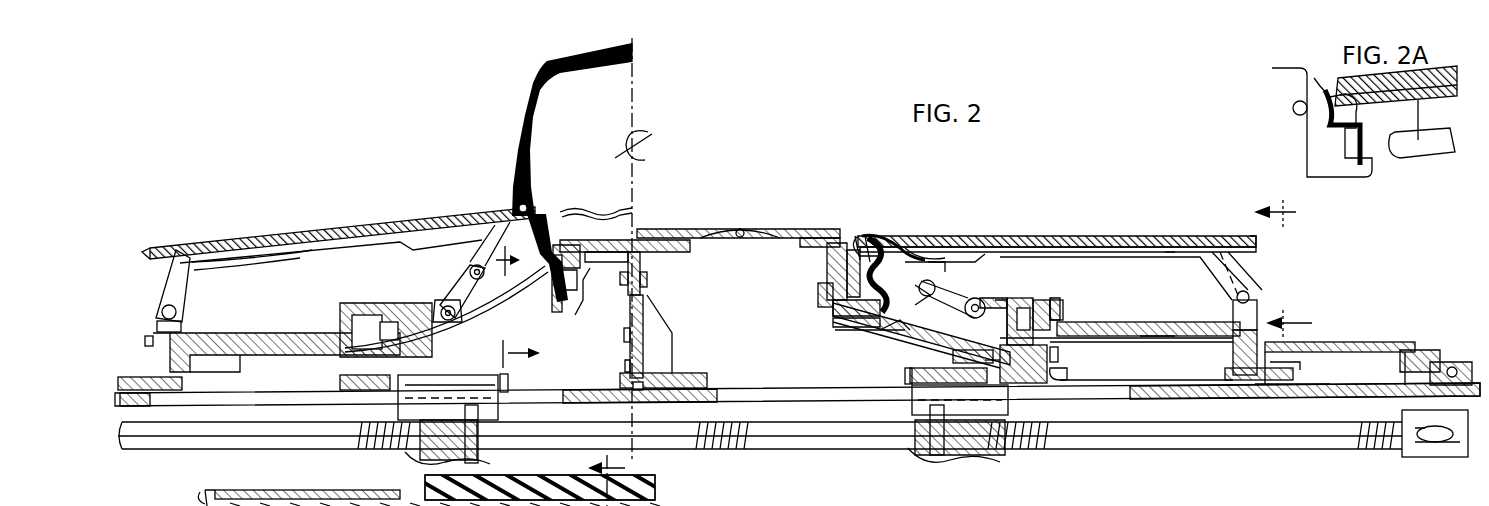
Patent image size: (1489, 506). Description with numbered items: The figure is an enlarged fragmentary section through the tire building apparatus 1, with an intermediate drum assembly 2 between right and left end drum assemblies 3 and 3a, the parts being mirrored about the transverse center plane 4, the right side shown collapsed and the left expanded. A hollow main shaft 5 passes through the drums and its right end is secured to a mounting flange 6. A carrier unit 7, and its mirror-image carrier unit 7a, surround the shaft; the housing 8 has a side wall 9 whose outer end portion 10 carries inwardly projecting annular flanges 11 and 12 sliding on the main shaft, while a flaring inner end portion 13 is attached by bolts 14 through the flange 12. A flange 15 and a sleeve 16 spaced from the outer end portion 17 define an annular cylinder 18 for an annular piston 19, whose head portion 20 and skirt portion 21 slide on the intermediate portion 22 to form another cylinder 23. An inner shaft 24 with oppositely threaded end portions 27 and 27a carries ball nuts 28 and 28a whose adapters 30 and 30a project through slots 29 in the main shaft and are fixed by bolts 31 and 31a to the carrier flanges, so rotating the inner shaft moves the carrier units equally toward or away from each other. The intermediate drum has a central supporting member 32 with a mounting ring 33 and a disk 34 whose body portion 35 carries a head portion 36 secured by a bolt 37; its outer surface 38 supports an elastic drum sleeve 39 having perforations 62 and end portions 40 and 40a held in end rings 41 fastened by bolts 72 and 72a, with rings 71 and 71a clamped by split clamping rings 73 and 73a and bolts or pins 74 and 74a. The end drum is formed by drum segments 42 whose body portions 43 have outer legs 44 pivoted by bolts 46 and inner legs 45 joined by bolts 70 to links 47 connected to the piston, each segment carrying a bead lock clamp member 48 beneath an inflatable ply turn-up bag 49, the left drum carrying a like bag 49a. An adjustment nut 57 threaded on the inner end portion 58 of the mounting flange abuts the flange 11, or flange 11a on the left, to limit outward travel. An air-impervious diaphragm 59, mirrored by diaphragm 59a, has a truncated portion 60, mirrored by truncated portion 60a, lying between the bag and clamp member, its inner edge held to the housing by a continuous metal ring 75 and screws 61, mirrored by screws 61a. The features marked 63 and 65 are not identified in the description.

In FIG. 2, the tire building apparatus 1 is at (1312, 270).
In FIG. 2, the intermediate drum assembly 2 is at (783, 229).
In FIG. 2, the end drum assembly 3 is at (1132, 236).
In FIG. 2, the end drum assembly 3a is at (340, 224).
In FIG. 2, the transverse center plane 4 is at (638, 87).
In FIG. 2, the main shaft 5 is at (1328, 386).
In FIG. 2, the mounting flange 6 is at (1446, 362).
In FIG. 2, the carrier unit 7 is at (1232, 358).
In FIG. 2, the carrier unit 7a is at (153, 333).
In FIG. 2, the housing 8 is at (1118, 322).
In FIG. 2, the side wall portion 9 is at (1158, 322).
In FIG. 2, the outer end portion 10 is at (1193, 322).
In FIG. 2, the annular flange 11 is at (1284, 366).
In FIG. 2, the annular flange 11a is at (578, 275).
In FIG. 2, the annular flange 12 is at (1070, 370).
In FIG. 2, the inner end portion 13 is at (678, 307).
In FIG. 2, the bolts 14 is at (1060, 354).
In FIG. 2, the radially outwardly projecting flange 15 is at (1064, 314).
In FIG. 2, the sleeve 16 is at (1022, 300).
In FIG. 2, the outer end portion 17 is at (990, 348).
In FIG. 2, the annular cylinder 18 is at (1067, 305).
In FIG. 2, the annular piston 19 is at (1033, 300).
In FIG. 2, the annular head portion 20 is at (1048, 306).
In FIG. 2, the annular sleeve or skirt portion 21 is at (1003, 300).
In FIG. 2, the intermediate portion 22 is at (945, 306).
In FIG. 2, the annular cylinder 23 is at (985, 360).
In FIG. 2, the inner shaft 24 is at (792, 452).
In FIG. 2, the threaded end portion 27 is at (1040, 447).
In FIG. 2, the threaded end portion 27a is at (282, 452).
In FIG. 2, the ball nut 28 is at (920, 458).
In FIG. 2, the ball nut 28a is at (492, 457).
In FIG. 2, the slots 29 is at (733, 388).
In FIG. 2, the adapters 30 is at (1010, 410).
In FIG. 2, the adapters 30a is at (500, 411).
In FIG. 2, the bolts 31 is at (903, 380).
In FIG. 2, the bolts 31a is at (510, 379).
In FIG. 2, the central supporting member 32 is at (672, 333).
In FIG. 2, the mounting ring 33 is at (680, 373).
In FIG. 2, the disk 34 is at (630, 346).
In FIG. 2, the body portion 35 is at (630, 363).
In FIG. 2, the head portion 36 is at (641, 257).
In FIG. 2, the bolt 37 is at (648, 282).
In FIG. 2, the radially outer surface 38 is at (660, 237).
In FIG. 2, the drum sleeve 39 is at (590, 208).
In FIG. 2, the annular end portion 40 is at (825, 263).
In FIG. 2, the annular end portion 40a is at (636, 256).
In FIG. 2, the end ring 41 is at (826, 278).
In FIG. 2, the drum segments 42 is at (1086, 236).
In FIG. 2, the body portion 43 is at (1172, 246).
In FIG. 2, the outer leg 44 is at (1249, 282).
In FIG. 2, the inner leg 45 is at (932, 268).
In FIG. 2, the bolts 46 is at (1250, 297).
In FIG. 2, the link 47 is at (950, 293).
In FIG. 2, the bead lock clamp member 48 is at (873, 236).
In FIG. 2A, the bead lock clamp member 48 is at (1298, 98).
In FIG. 2, the inflatable ply turn-up bag 49 is at (1258, 239).
In FIG. 2A, the inflatable ply turn-up bag 49 is at (1450, 70).
In FIG. 2, the inflatable ply turn-up bag 49a is at (160, 258).
In FIG. 2, the adjustment nut 57 is at (1350, 342).
In FIG. 2, the inner end portion 58 is at (1430, 350).
In FIG. 2, the diaphragm 59 is at (870, 236).
In FIG. 2A, the diaphragm 59 is at (1325, 120).
In FIG. 2, the diaphragm 59a is at (540, 272).
In FIG. 2, the truncated portion 60 is at (915, 237).
In FIG. 2A, the truncated portion 60 is at (1395, 112).
In FIG. 2, the truncated portion 60a is at (508, 209).
In FIG. 2, the bolts or screws 61 is at (898, 332).
In FIG. 2, the bolts or screws 61a is at (522, 307).
In FIG. 2, the perforations 62 is at (573, 212).
In FIG. 2, the wall 63 is at (524, 122).
In FIG. 2, the wall top 65 is at (577, 72).
In FIG. 2, the bolts 70 is at (932, 290).
In FIG. 2, the ring 71 is at (862, 228).
In FIG. 2, the ring 71a is at (583, 285).
In FIG. 2, the bolts 72 is at (818, 296).
In FIG. 2, the bolts 72a is at (630, 335).
In FIG. 2, the split clamping ring 73 is at (858, 319).
In FIG. 2, the split clamping ring 73a is at (485, 338).
In FIG. 2, the bolts or pins 74 is at (832, 311).
In FIG. 2, the bolts or pins 74a is at (447, 284).
In FIG. 2, the continuous metal ring 75 is at (905, 320).